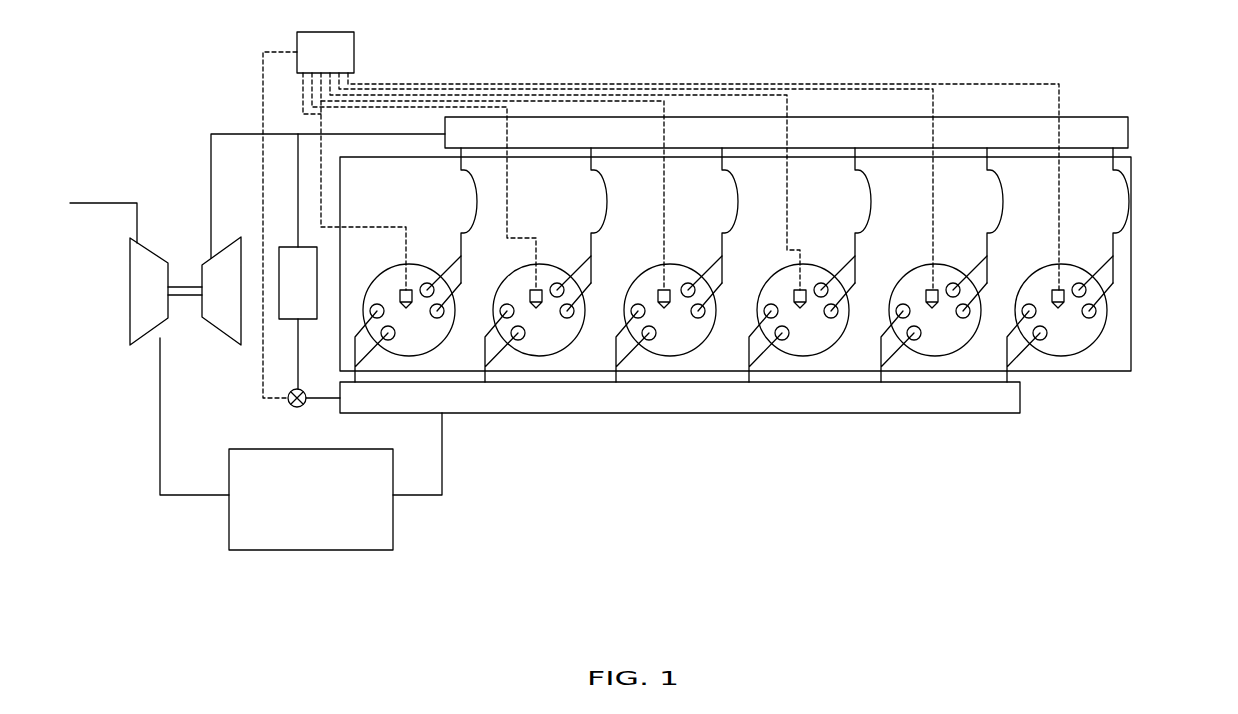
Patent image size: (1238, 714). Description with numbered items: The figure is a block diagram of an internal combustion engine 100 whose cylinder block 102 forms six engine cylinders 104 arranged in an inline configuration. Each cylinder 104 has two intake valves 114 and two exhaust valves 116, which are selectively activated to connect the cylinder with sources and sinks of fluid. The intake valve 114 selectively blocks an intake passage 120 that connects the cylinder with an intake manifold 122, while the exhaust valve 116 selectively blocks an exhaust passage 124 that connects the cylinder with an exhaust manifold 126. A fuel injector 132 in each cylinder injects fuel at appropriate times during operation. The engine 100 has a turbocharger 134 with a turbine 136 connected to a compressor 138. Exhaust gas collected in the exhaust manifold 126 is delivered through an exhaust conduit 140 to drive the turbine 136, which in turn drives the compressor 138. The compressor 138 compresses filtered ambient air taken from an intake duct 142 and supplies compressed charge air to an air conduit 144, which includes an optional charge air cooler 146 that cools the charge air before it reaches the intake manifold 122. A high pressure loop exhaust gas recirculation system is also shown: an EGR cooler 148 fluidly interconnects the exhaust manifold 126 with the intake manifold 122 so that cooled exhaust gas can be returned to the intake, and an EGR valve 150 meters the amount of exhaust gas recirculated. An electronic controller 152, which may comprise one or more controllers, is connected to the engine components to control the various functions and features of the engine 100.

The internal combustion engine 100 is at (1138, 92).
The cylinder block 102 is at (1118, 352).
The engine cylinder 104 is at (1077, 352).
The intake valve 114 is at (1040, 336).
The exhaust valve 116 is at (1094, 312).
The intake passage 120 is at (905, 313).
The intake manifold 122 is at (967, 398).
The exhaust passage 124 is at (993, 172).
The exhaust manifold 126 is at (907, 130).
The fuel injector 132 is at (406, 292).
The turbocharger 134 is at (163, 135).
The turbine 136 is at (236, 340).
The compressor 138 is at (130, 311).
The exhaust conduit 140 is at (240, 134).
The intake duct 142 is at (103, 203).
The air conduit 144 is at (161, 470).
The charge air cooler 146 is at (229, 535).
The EGR cooler 148 is at (279, 270).
The EGR valve 150 is at (288, 408).
The electronic controller 152 is at (357, 47).